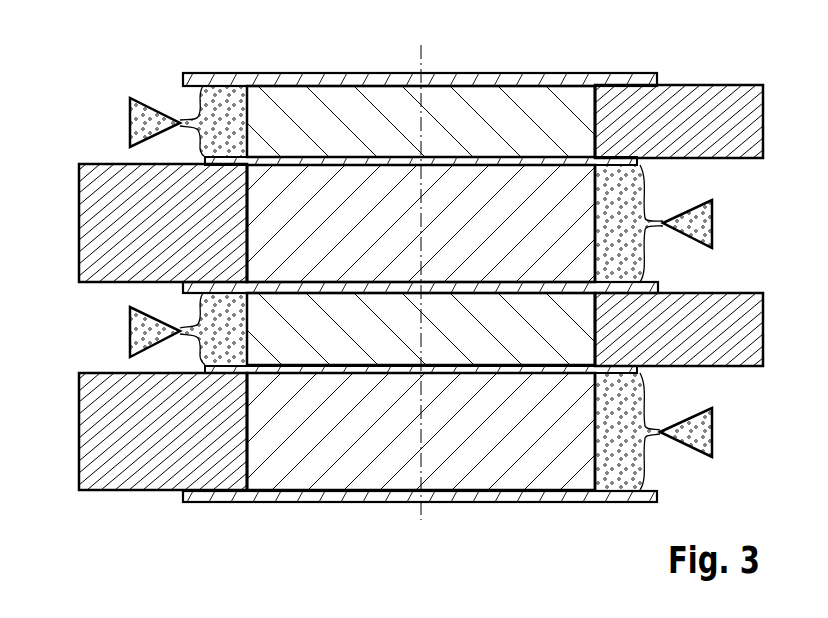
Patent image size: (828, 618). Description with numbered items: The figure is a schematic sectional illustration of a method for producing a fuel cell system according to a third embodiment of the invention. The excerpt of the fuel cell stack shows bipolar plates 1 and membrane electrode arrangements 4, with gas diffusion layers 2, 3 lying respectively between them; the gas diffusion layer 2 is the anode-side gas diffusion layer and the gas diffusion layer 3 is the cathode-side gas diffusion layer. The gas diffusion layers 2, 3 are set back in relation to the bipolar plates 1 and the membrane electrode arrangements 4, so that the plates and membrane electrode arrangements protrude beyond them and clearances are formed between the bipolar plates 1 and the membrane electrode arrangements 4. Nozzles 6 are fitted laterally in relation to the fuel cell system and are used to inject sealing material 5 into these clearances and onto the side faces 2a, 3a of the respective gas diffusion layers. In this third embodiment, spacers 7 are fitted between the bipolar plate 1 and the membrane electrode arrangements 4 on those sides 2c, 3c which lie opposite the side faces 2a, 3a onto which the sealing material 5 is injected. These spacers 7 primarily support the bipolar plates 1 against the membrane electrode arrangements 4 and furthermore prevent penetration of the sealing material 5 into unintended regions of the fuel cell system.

The bipolar plate 1 is at (391, 79).
The anode-side gas diffusion layer 2 is at (487, 97).
The side face of the anode-side gas diffusion layer 2a is at (244, 90).
The opposite side of the anode-side gas diffusion layer 2c is at (594, 97).
The cathode-side gas diffusion layer 3 is at (361, 177).
The side face of the cathode-side gas diffusion layer 3a is at (586, 197).
The opposite side of the cathode-side gas diffusion layer 3c is at (250, 213).
The membrane electrode arrangement 4 is at (637, 162).
The sealing material 5 is at (635, 257).
The nozzle 6 is at (712, 223).
The spacer 7 is at (725, 96).